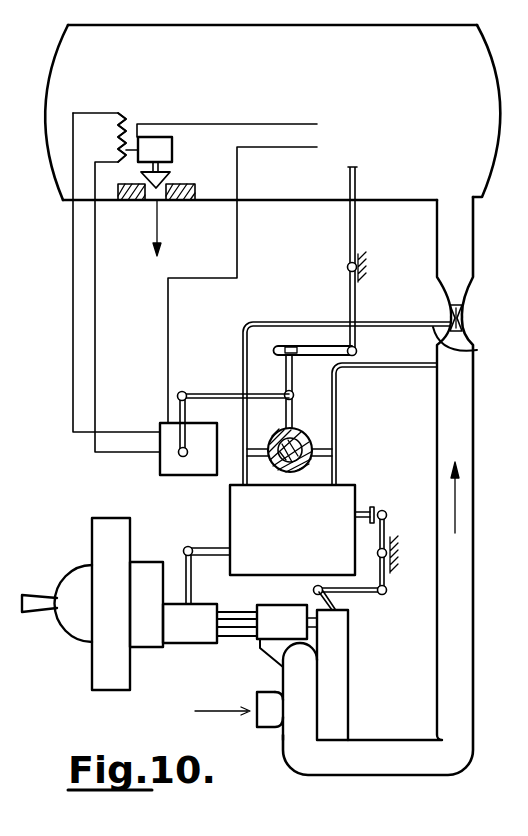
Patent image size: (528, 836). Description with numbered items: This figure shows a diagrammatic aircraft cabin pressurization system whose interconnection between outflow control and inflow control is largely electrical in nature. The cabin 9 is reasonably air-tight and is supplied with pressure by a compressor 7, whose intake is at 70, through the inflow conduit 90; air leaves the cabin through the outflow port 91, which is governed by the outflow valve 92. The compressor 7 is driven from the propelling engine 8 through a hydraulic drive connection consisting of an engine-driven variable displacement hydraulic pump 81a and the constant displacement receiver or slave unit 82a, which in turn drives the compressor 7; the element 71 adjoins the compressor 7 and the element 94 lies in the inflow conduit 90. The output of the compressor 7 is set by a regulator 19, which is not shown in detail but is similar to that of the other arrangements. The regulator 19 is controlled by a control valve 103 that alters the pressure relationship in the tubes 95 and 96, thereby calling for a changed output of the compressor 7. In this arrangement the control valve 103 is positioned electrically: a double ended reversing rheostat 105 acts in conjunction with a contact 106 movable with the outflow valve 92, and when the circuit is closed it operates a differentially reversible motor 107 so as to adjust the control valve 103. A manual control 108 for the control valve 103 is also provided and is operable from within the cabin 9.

The cabin 9 is at (411, 27).
The contact 106 is at (131, 138).
The double ended reversing rheostat 105 is at (172, 147).
The outflow valve 92 is at (139, 189).
The outflow port 91 is at (158, 200).
The manual control 108 is at (349, 177).
The throttle valve 94 is at (462, 318).
The tube 95 is at (473, 347).
The tube 96 is at (386, 368).
The control valve 103 is at (312, 442).
The regulator 19 is at (332, 498).
The differentially reversible motor 107 is at (212, 476).
The propelling engine 8 is at (78, 633).
The variable displacement hydraulic pump 81a is at (198, 614).
The constant displacement receiver 82a is at (270, 616).
The compressor 7 is at (303, 685).
The intake 70 is at (272, 700).
The column 71 is at (340, 707).
The inflow conduit 90 is at (462, 577).